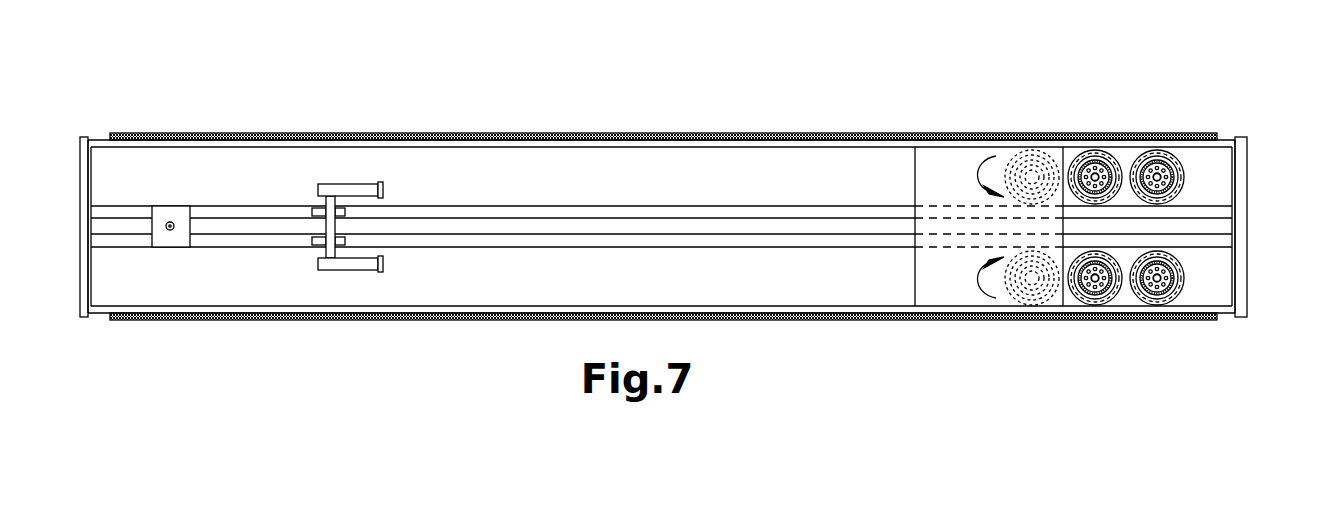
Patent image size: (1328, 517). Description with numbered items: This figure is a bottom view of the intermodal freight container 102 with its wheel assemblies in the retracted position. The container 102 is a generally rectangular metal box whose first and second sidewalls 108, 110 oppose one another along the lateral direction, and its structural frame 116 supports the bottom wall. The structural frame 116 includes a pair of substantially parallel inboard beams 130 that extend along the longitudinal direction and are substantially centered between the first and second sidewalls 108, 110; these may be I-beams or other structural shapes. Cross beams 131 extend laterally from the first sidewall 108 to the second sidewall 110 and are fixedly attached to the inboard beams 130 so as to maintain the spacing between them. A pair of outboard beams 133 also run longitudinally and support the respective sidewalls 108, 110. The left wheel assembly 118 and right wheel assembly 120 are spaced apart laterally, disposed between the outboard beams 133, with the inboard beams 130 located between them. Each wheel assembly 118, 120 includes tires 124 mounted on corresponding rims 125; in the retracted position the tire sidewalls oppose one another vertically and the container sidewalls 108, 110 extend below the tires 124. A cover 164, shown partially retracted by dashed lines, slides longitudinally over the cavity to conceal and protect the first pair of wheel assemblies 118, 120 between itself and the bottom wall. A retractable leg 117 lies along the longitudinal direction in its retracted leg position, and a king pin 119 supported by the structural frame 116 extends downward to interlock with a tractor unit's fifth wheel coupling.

The intermodal freight container 102 is at (724, 86).
The first sidewall 108 is at (452, 320).
The second sidewall 110 is at (480, 135).
The structural frame 116 is at (84, 137).
The retractable leg 117 is at (353, 185).
The left wheel assembly 118 is at (1202, 285).
The king pin 119 is at (171, 222).
The right wheel assembly 120 is at (1172, 225).
The tire 124 is at (1140, 157).
The rim 125 is at (1158, 174).
The inboard beam 130 is at (542, 213).
The cross beam 131 is at (85, 178).
The outboard beam 133 is at (297, 132).
The cover 164 is at (958, 287).